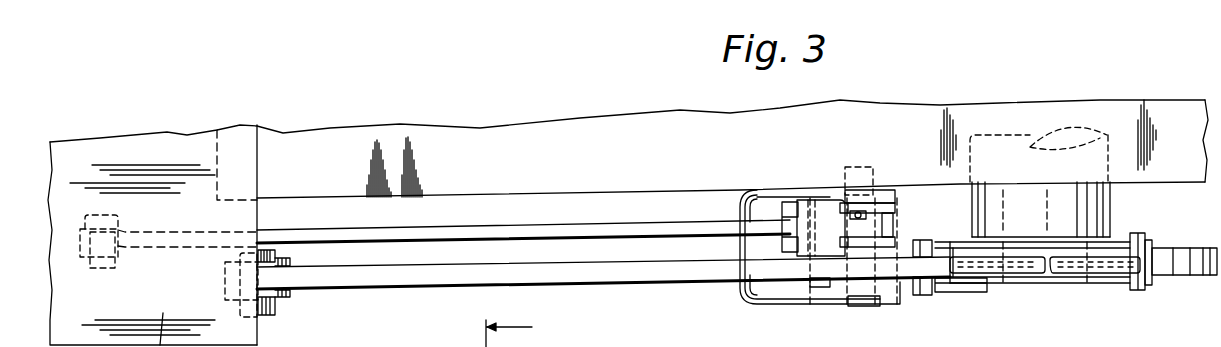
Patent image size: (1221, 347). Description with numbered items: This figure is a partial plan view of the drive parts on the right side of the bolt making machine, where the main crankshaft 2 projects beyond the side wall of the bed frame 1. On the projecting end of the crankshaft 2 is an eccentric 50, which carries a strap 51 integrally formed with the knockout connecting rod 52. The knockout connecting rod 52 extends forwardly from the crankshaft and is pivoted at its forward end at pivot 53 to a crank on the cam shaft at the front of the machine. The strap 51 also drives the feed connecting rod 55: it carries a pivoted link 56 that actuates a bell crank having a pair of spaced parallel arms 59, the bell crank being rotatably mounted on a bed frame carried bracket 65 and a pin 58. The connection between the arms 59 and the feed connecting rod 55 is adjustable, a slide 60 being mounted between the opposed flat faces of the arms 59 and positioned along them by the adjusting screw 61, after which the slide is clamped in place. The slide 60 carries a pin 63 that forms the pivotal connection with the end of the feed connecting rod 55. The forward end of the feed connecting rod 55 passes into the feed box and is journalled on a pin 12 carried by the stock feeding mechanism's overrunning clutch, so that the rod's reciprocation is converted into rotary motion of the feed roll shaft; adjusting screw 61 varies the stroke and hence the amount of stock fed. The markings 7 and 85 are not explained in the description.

The bed frame 1 is at (600, 143).
The main crankshaft 2 is at (1040, 182).
The section line 7 is at (509, 326).
The pin 12 is at (103, 260).
The eccentric 50 is at (1133, 238).
The strap 51 is at (920, 285).
The knockout connecting rod 52 is at (620, 277).
The pivot 53 is at (275, 308).
The feed connecting rod 55 is at (653, 230).
The pivoted link 56 is at (960, 290).
The pin 58 is at (860, 300).
The spaced parallel arms 59 is at (893, 207).
The slide 60 is at (885, 222).
The adjusting screw 61 is at (859, 212).
The pin 63 is at (813, 198).
The bracket 65 is at (785, 293).
The element 85 is at (578, 336).